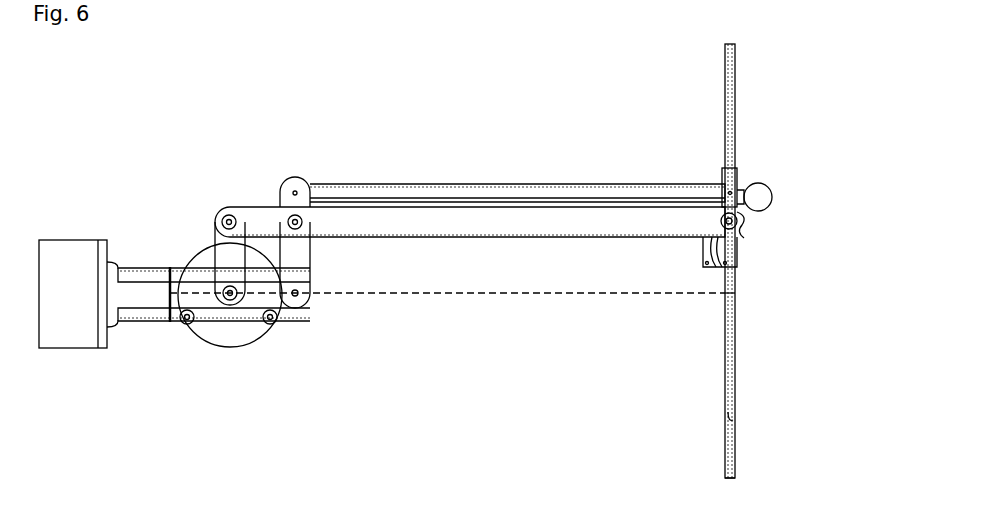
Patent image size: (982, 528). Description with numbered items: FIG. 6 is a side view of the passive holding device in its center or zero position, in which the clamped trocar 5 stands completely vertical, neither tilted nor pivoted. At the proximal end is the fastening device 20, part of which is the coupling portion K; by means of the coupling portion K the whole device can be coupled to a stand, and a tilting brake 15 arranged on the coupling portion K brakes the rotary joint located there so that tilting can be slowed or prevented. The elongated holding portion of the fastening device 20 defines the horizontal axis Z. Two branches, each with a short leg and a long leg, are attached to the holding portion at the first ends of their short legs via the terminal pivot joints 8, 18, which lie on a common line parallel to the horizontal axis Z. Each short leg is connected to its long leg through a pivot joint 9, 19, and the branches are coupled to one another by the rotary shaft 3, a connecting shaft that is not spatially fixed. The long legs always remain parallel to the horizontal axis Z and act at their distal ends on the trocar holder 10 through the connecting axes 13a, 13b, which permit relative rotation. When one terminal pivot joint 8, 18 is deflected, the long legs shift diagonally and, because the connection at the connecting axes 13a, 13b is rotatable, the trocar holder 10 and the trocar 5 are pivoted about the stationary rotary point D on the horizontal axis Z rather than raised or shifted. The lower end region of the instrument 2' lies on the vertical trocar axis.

The tilting brake 15 is at (78, 262).
The fastening device 20 is at (161, 258).
The coupling portion K is at (122, 298).
The terminal pivot joint 18 is at (234, 297).
The pivot joint 19 is at (222, 222).
The rotary shaft 3 is at (290, 218).
The pivot joint 9 is at (295, 192).
The terminal pivot joint 8 is at (298, 297).
The connecting axis 13a is at (730, 190).
The connecting axis 13b is at (732, 222).
The trocar holder 10 is at (704, 245).
The trocar 5 is at (726, 365).
The post lower end 2' is at (681, 473).
The rotary point D is at (730, 293).
The horizontal axis Z is at (447, 314).